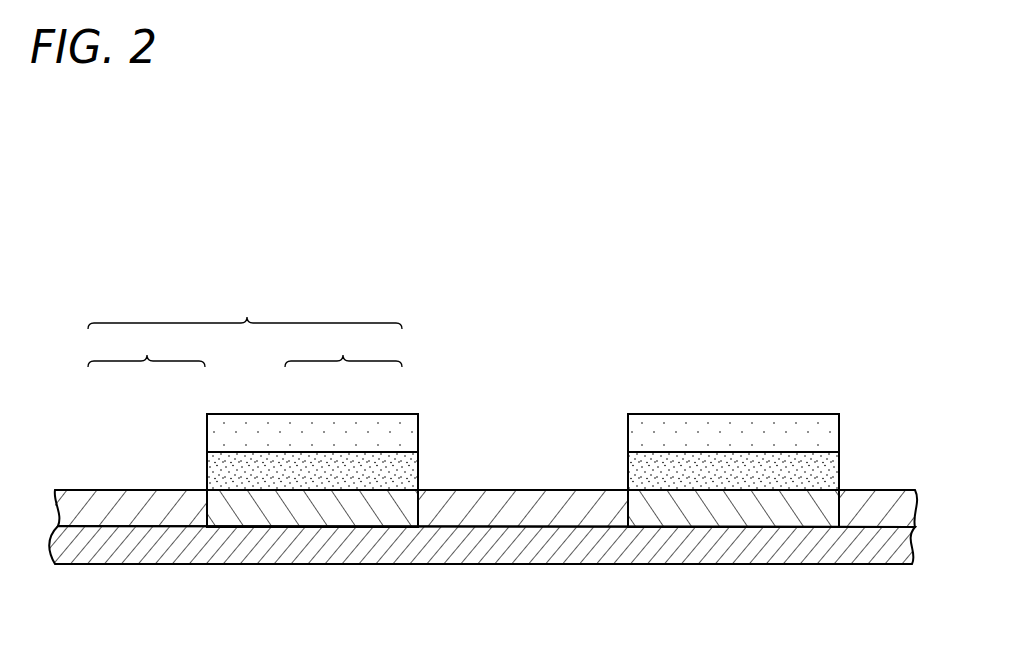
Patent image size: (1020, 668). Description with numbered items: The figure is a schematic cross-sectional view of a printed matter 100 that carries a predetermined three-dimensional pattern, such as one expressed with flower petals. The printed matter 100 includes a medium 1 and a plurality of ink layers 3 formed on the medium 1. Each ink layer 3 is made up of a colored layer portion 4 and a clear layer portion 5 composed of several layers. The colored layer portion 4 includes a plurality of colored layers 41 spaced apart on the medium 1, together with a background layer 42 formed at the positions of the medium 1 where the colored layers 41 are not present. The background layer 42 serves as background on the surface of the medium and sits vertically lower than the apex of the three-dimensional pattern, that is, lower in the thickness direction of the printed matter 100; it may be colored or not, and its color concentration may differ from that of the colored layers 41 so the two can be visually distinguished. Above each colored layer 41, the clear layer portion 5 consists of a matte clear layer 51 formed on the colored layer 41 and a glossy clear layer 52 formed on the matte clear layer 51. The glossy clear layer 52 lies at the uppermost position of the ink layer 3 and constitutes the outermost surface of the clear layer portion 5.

The printed matter 100 is at (559, 273).
The medium 1 is at (523, 546).
The ink layer 3 is at (245, 309).
The colored layer portion 4 is at (146, 347).
The colored layer 41 is at (216, 510).
The background layer 42 is at (91, 490).
The clear layer portion 5 is at (343, 348).
The matte clear layer 51 is at (383, 471).
The glossy clear layer 52 is at (298, 433).